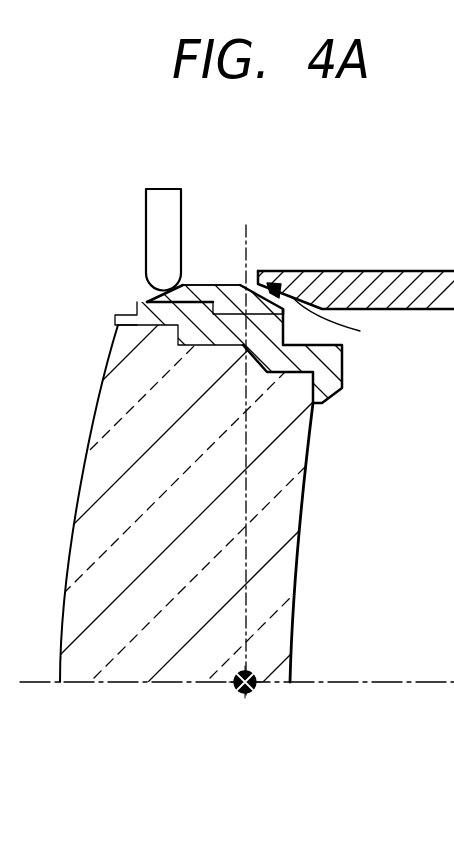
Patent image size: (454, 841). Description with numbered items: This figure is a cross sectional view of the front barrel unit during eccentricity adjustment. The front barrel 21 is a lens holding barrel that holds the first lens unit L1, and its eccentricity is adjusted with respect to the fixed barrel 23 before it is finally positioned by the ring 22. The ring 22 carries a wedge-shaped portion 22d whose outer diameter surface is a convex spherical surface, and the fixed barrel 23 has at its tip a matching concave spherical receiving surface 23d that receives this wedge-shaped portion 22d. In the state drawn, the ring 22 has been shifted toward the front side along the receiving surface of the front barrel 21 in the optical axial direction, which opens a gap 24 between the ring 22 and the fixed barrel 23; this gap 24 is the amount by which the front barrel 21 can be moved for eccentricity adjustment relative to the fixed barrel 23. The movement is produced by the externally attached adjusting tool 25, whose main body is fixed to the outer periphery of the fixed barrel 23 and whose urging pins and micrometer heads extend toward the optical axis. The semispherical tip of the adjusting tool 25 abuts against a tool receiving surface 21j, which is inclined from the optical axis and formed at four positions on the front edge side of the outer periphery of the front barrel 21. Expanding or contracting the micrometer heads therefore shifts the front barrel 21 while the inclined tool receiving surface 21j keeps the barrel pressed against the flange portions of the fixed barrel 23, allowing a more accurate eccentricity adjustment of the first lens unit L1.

The front barrel 21 is at (345, 366).
The tool receiving surface 21j is at (150, 302).
The ring 22 is at (230, 284).
The wedge-shaped portion 22d is at (250, 283).
The fixed barrel 23 is at (404, 271).
The receiving surface 23d is at (345, 322).
The gap 24 is at (276, 286).
The adjusting tool 25 is at (163, 189).
The first lens unit L1 is at (298, 567).